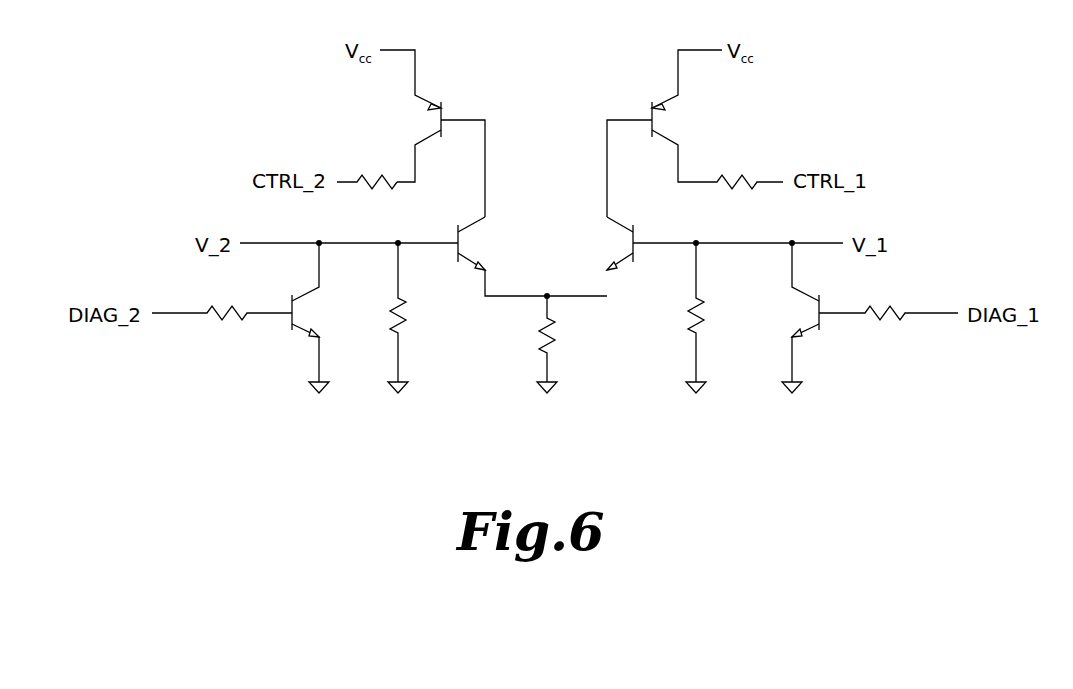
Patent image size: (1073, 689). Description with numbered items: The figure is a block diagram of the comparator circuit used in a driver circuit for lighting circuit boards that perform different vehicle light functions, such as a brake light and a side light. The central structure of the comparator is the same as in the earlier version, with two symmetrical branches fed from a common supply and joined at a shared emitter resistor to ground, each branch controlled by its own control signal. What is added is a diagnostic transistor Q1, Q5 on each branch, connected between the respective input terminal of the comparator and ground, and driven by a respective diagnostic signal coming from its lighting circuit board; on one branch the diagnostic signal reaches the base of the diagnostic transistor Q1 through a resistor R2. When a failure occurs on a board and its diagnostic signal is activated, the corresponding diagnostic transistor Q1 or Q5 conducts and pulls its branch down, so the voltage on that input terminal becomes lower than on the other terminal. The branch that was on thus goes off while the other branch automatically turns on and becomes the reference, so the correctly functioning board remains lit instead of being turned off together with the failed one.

The diagnostic transistor Q1 is at (320, 316).
The diagnostic transistor Q5 is at (788, 316).
The resistor R2 is at (222, 331).